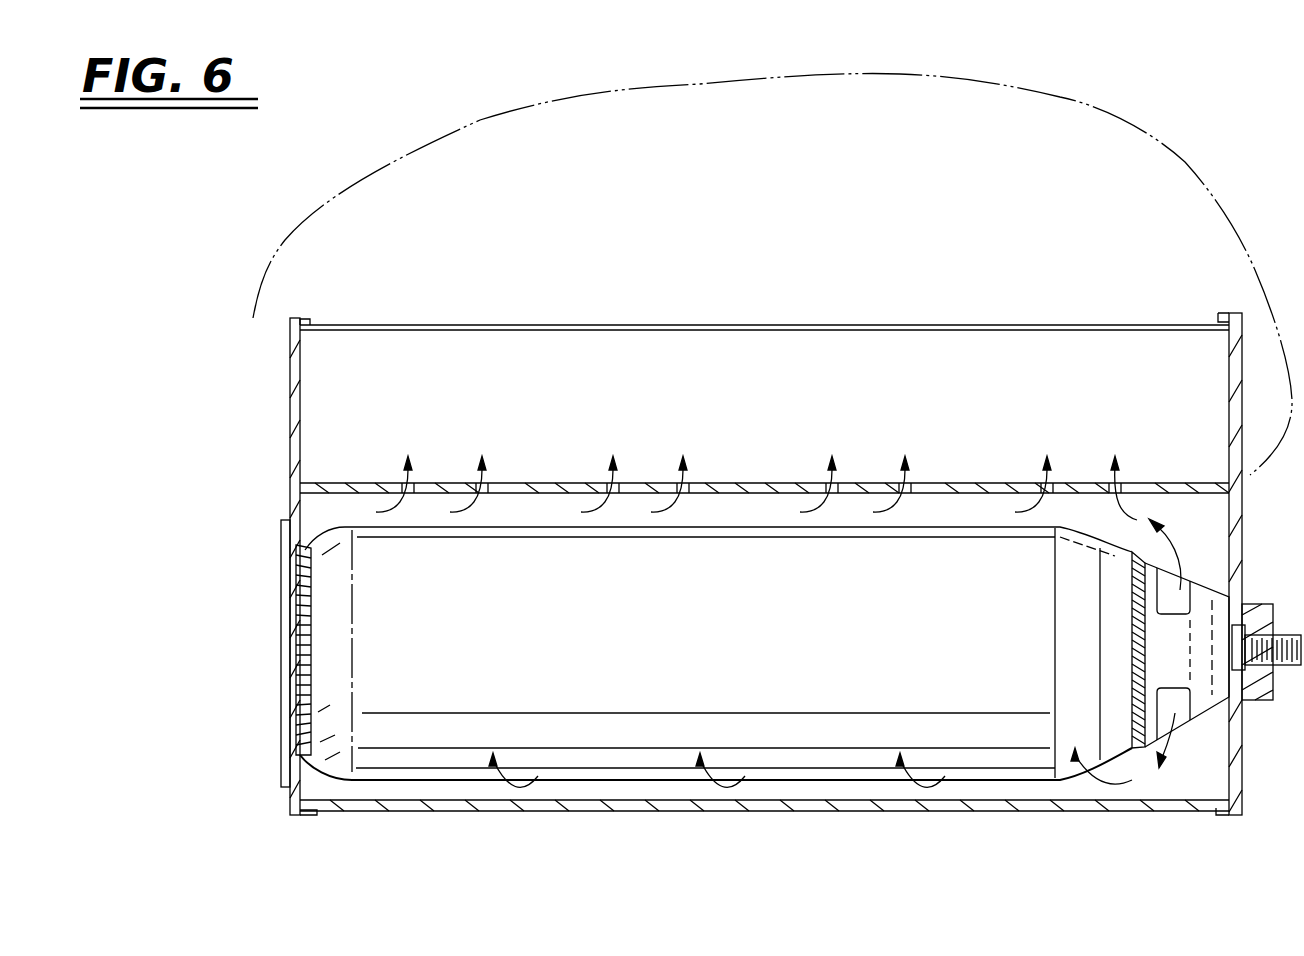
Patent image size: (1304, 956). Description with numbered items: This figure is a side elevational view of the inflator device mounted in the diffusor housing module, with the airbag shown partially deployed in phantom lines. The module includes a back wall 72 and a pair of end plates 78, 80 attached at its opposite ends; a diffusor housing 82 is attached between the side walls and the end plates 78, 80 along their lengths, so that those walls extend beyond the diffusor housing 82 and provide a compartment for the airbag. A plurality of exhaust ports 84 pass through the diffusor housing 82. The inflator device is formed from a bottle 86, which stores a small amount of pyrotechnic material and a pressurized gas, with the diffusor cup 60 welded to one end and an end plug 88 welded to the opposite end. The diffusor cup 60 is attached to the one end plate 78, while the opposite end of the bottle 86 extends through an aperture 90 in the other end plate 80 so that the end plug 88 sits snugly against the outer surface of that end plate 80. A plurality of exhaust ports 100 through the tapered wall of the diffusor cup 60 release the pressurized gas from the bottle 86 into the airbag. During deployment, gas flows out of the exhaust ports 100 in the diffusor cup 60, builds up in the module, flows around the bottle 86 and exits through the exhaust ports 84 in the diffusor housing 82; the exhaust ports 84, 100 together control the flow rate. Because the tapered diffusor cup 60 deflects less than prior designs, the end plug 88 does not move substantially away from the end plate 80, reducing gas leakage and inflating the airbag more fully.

The diffusor cup 60 is at (1210, 588).
The back wall 72 is at (822, 804).
The end plate 78 is at (1243, 800).
The end plate 80 is at (300, 800).
The diffusor housing 82 is at (736, 484).
The exhaust ports 84 is at (492, 488).
The bottle 86 is at (586, 755).
The end plug 88 is at (285, 665).
The aperture 90 is at (298, 550).
The exhaust ports 100 is at (1186, 705).